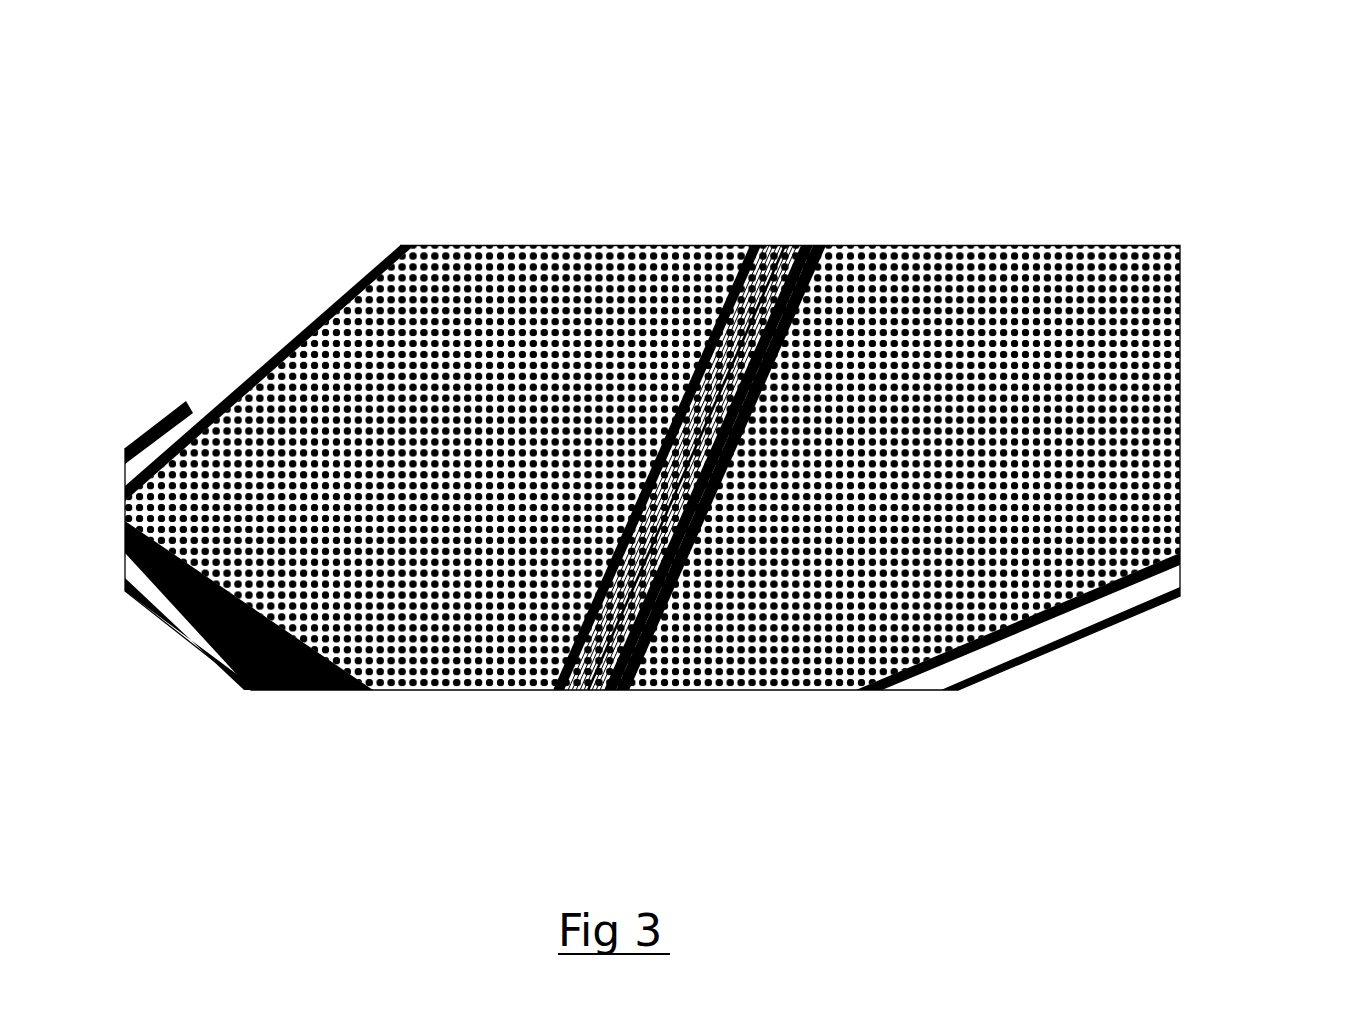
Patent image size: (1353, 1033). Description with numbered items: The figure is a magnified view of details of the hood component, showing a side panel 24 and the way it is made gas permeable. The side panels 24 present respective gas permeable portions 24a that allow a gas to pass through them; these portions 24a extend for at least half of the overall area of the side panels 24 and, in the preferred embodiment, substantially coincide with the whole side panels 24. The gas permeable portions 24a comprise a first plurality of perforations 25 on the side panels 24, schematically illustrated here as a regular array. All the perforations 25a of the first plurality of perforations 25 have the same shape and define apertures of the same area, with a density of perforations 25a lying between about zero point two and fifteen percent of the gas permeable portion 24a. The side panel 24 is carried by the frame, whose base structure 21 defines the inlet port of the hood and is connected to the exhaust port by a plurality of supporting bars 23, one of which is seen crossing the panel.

The base structure 21 is at (172, 627).
The supporting bars 23 is at (725, 335).
The side panels 24 is at (533, 345).
The gas permeable portions 24a is at (425, 540).
The first plurality of perforations 25 is at (428, 345).
The perforations 25a is at (305, 432).